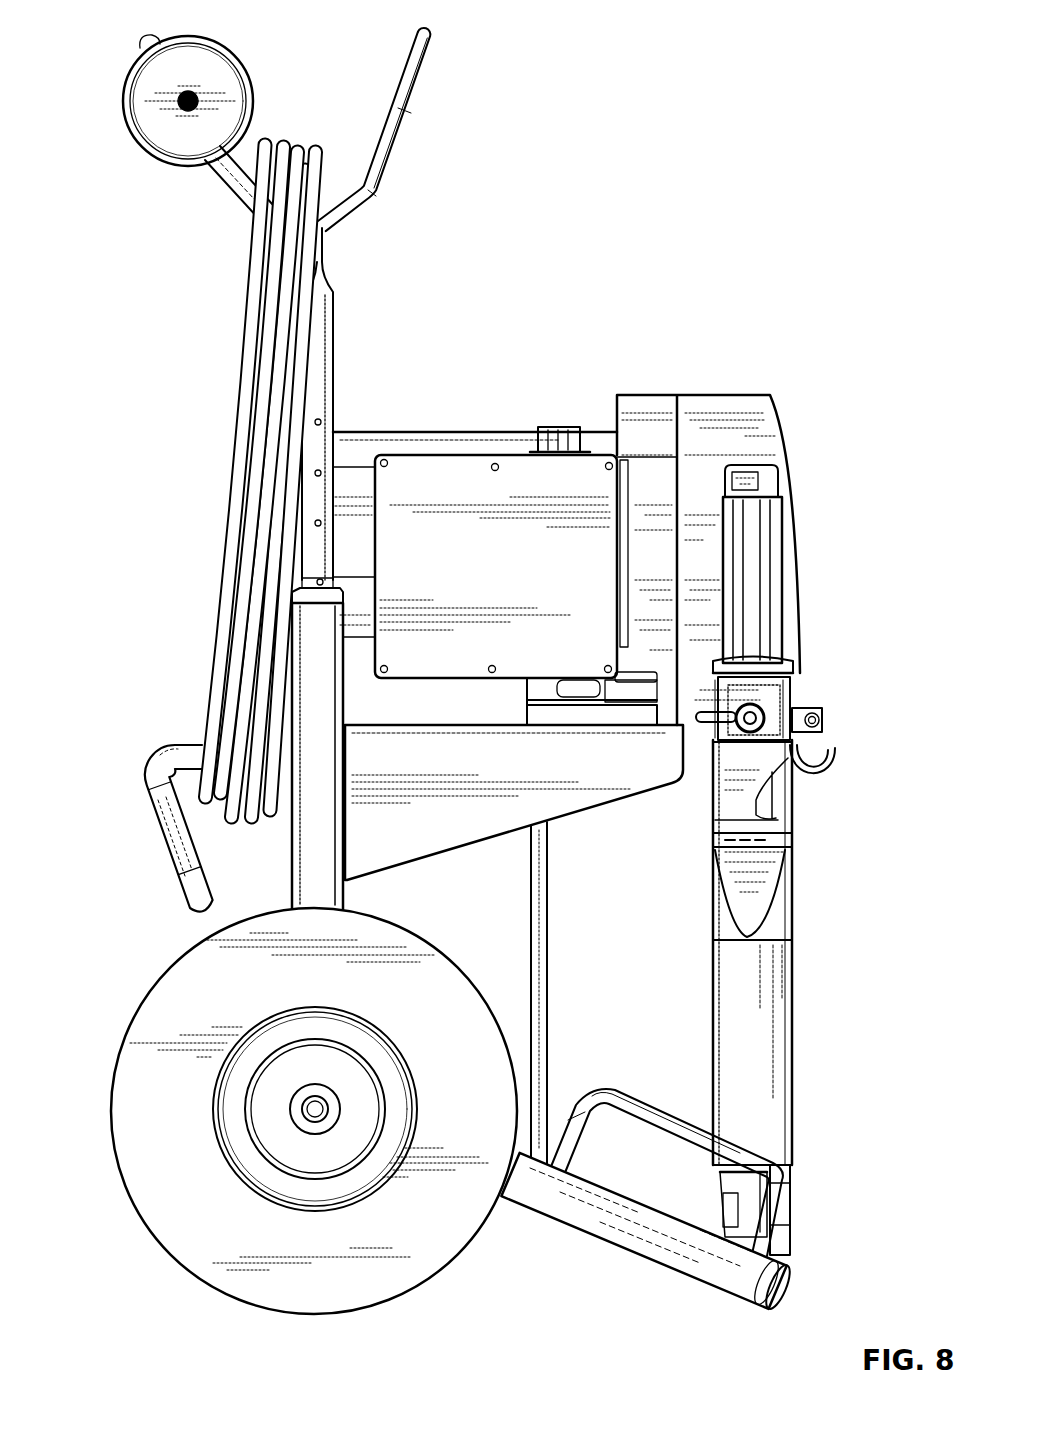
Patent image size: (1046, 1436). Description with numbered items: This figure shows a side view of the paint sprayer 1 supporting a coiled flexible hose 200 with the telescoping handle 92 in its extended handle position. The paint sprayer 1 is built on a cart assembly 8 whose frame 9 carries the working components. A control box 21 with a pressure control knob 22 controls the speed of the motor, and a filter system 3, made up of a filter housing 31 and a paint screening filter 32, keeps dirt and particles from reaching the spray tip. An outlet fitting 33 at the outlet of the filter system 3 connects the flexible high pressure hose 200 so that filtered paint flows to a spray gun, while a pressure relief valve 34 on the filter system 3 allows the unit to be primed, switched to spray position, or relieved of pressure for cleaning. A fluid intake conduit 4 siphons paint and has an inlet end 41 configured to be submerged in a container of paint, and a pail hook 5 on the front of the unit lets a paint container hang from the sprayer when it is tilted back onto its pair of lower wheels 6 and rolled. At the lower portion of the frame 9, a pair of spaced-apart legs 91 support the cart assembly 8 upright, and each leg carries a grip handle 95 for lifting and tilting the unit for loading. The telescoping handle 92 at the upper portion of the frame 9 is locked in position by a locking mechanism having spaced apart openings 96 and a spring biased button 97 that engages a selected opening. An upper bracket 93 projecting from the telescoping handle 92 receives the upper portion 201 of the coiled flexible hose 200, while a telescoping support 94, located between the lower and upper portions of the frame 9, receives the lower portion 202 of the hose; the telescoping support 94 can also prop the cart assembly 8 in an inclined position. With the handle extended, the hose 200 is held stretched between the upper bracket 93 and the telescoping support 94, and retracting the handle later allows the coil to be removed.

The paint sprayer 1 is at (472, 665).
The filter system 3 is at (791, 554).
The fluid intake conduit 4 is at (782, 902).
The pail hook 5 is at (834, 750).
The lower wheels 6 is at (112, 1123).
The cart assembly 8 is at (674, 1182).
The frame 9 is at (530, 870).
The control box 21 is at (495, 543).
The pressure control knob 22 is at (556, 426).
The filter housing 31 is at (787, 478).
The paint screening filter 32 is at (785, 560).
The outlet fitting 33 is at (812, 706).
The pressure relief valve 34 is at (712, 735).
The inlet end 41 is at (790, 1226).
The spaced-apart legs 91 is at (652, 1270).
The telescoping handle 92 is at (228, 192).
The upper bracket 93 is at (406, 58).
The telescoping support 94 is at (160, 825).
The grip handle 95 is at (642, 1100).
The spaced apart openings 96 is at (325, 560).
The spring biased button 97 is at (314, 587).
The coiled flexible hose 200 is at (240, 485).
The upper portion of coiled flexible hose 201 is at (285, 145).
The lower portion of coiled flexible hose 202 is at (234, 828).